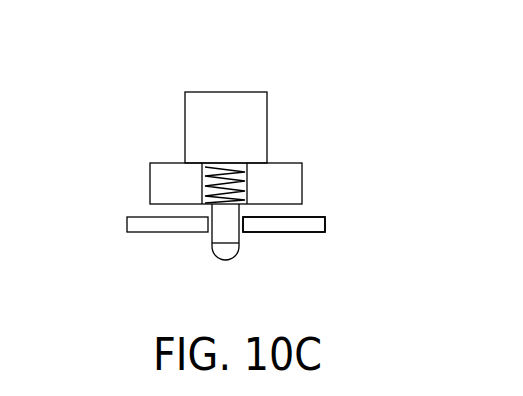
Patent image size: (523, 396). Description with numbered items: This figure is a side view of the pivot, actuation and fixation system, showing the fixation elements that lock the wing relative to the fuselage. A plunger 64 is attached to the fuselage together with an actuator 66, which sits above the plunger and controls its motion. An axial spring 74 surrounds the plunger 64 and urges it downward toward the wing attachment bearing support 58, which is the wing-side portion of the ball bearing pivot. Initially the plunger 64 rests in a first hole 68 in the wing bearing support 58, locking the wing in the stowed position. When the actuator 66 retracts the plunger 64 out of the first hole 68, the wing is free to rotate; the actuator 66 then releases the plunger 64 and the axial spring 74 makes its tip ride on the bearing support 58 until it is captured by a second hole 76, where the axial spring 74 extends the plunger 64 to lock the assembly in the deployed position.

The wing attachment bearing support 58 is at (311, 217).
The plunger 64 is at (224, 236).
The actuator 66 is at (267, 125).
The first hole 68 is at (245, 222).
The axial spring 74 is at (218, 168).
The second hole 76 is at (284, 224).